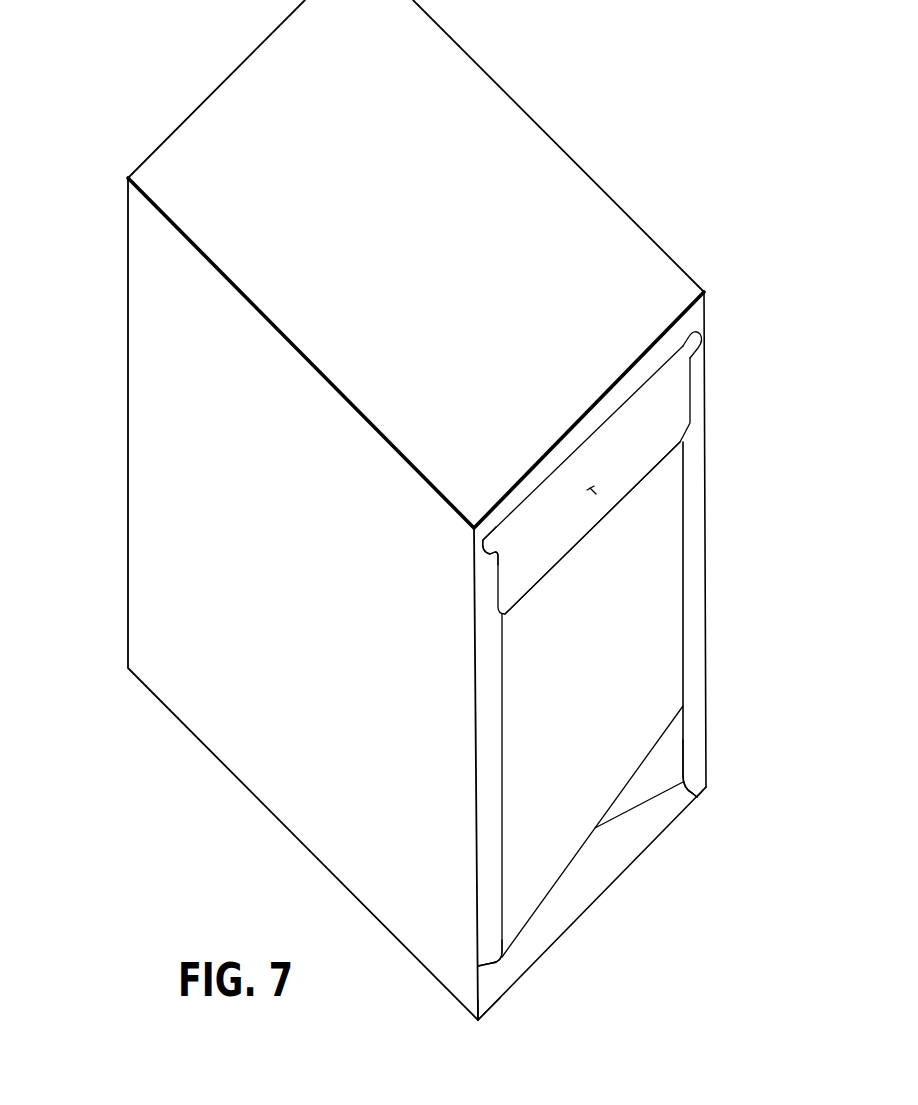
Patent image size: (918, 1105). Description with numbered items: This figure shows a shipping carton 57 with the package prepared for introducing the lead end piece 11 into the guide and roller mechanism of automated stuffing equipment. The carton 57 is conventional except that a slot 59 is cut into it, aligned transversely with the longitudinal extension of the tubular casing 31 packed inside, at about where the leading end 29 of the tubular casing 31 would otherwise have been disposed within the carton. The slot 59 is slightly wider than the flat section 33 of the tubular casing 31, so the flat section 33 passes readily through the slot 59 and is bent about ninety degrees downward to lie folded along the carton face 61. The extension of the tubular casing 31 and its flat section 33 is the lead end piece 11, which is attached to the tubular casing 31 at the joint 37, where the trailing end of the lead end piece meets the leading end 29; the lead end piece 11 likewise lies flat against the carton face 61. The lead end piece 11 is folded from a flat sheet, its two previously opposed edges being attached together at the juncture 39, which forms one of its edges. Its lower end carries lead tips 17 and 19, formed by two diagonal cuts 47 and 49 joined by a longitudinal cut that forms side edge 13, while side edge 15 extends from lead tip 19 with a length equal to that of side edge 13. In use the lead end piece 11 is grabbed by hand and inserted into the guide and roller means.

The shipping carton 57 is at (114, 431).
The carton face 61 is at (481, 692).
The juncture 39 is at (527, 759).
The side edge 15 is at (502, 880).
The lead end piece 11 is at (660, 604).
The flat section 33 is at (676, 411).
The slot 59 is at (698, 341).
The tubular casing 31 is at (482, 576).
The leading end 29 is at (655, 468).
The joint 37 is at (596, 494).
The side edge 13 is at (685, 752).
The lead tip 17 is at (697, 797).
The diagonal cut 47 is at (643, 805).
The diagonal cut 49 is at (527, 928).
The lead tip 19 is at (503, 961).